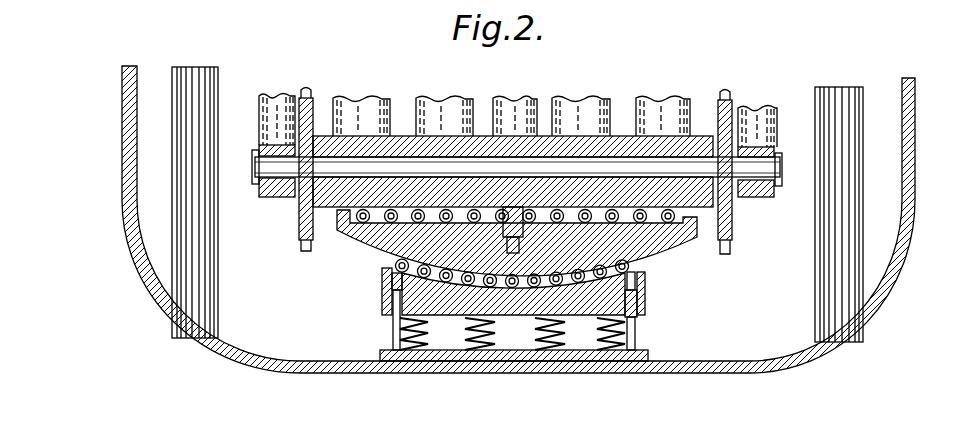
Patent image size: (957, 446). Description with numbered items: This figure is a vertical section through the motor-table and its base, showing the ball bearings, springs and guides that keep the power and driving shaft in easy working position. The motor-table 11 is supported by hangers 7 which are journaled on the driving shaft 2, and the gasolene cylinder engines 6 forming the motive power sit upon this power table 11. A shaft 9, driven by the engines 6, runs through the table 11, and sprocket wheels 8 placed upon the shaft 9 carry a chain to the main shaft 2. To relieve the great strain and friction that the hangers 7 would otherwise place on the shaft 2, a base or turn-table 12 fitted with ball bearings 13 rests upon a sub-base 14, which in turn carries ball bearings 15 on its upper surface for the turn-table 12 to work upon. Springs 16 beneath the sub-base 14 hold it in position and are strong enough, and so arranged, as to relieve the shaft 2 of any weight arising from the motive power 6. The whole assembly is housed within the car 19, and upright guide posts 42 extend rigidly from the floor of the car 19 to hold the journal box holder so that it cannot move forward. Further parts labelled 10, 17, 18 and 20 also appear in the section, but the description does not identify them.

The driving shaft 2 is at (752, 0).
The gasolene cylinder engines 6 is at (352, 100).
The hangers 7 is at (275, 97).
The sprocket wheels 8 is at (299, 230).
The shaft 9 is at (256, 168).
The upper block 10 is at (260, 149).
The motor-table 11 is at (322, 198).
The turn-table 12 is at (345, 232).
The ball bearings 13 is at (648, 228).
The sub-base 14 is at (648, 288).
The ball bearings 15 is at (383, 280).
The springs 16 is at (572, 325).
The guide pins 17 is at (393, 325).
The base plate 18 is at (384, 355).
The car 19 is at (122, 145).
The cylinder 20 is at (517, 98).
The upright guide posts 42 is at (175, 200).